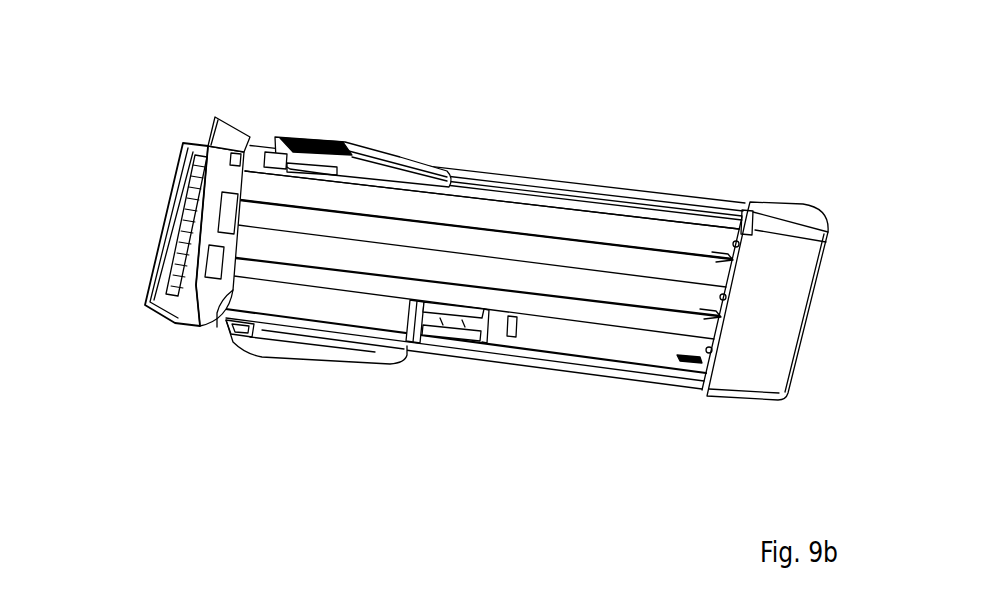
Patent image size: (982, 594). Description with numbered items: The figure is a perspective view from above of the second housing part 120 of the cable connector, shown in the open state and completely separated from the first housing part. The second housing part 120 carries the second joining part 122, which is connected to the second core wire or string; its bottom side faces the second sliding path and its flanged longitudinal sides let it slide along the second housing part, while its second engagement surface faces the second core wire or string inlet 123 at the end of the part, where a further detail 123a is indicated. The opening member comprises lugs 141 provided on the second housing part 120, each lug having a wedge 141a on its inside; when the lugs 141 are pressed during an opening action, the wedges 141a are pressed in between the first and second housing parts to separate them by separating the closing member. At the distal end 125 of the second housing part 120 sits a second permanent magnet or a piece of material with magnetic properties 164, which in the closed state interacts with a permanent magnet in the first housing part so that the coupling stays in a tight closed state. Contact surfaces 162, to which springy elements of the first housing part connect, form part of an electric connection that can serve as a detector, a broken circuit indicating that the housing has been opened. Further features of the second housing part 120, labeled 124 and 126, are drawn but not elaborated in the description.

The second housing part 120 is at (563, 176).
The second joining part 122 is at (489, 327).
The second core wire or string inlet 123 is at (754, 232).
The end plate stop 123a is at (690, 357).
The middle plate 124 is at (615, 232).
The second housing part distal end 125 is at (230, 180).
The top rail 126 is at (497, 176).
The lugs 141 is at (372, 157).
The wedge 141a is at (253, 338).
The contact surfaces 162 is at (170, 190).
The piece of material with magnetic properties 164 is at (218, 208).